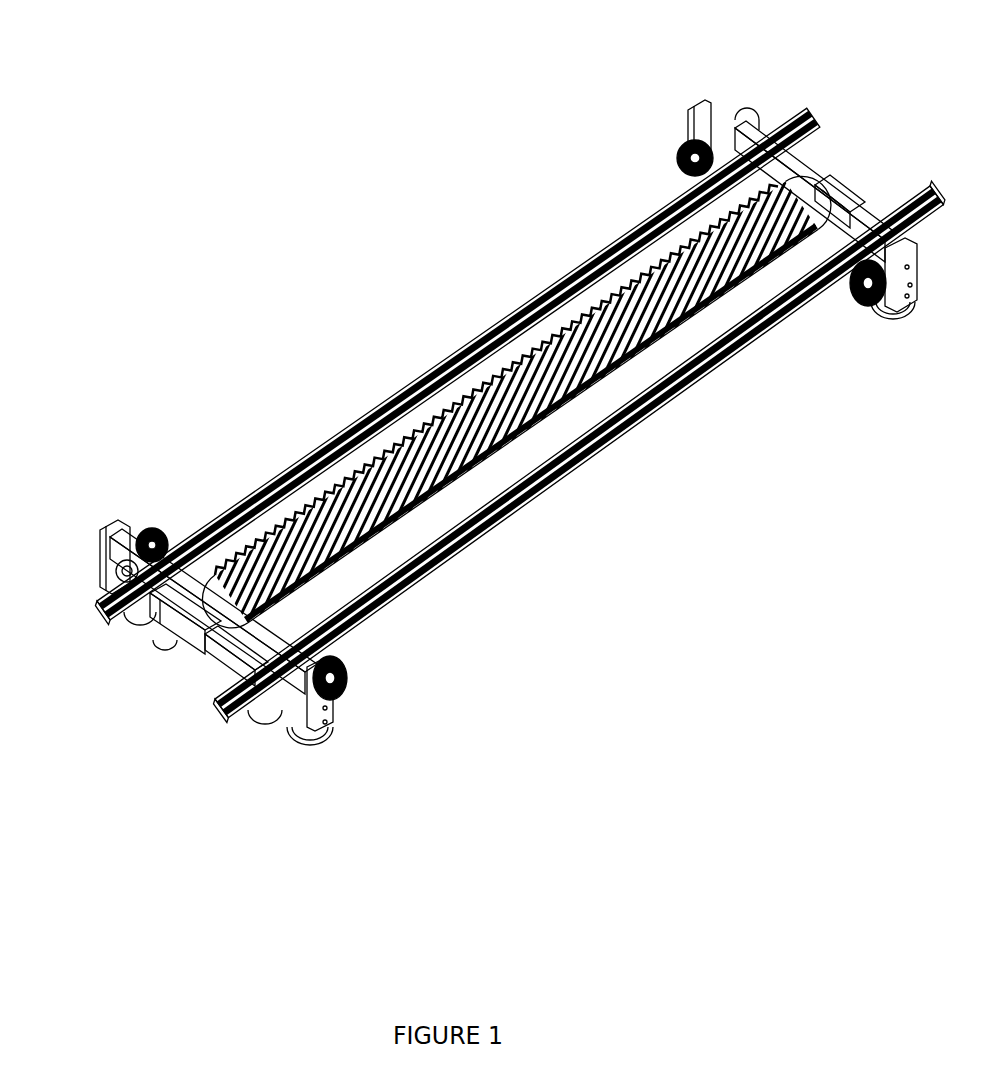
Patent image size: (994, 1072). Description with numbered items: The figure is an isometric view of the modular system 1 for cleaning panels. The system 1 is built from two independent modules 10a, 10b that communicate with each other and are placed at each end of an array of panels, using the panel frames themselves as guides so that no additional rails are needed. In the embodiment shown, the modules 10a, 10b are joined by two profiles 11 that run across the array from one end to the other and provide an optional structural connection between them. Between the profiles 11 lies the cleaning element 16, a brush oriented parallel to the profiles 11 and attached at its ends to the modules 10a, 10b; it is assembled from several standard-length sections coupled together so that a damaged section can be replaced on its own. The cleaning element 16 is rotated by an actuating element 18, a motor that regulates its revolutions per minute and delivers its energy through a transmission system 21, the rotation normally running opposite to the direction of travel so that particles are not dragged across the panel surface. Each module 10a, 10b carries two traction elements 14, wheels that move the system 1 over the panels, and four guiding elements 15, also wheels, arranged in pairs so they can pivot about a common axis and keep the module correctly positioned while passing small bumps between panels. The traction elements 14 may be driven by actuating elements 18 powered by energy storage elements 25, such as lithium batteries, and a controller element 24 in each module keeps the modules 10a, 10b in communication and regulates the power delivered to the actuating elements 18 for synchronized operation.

The modular system 1 is at (342, 207).
The module 10a is at (715, 120).
The module 10b is at (115, 530).
The profile 11 is at (493, 327).
The traction element 14 is at (680, 150).
The guiding element 15 is at (898, 330).
The cleaning element 16 is at (566, 320).
The actuating element 18 is at (100, 584).
The transmission system 21 is at (182, 637).
The controller element 24 is at (223, 660).
The energy storage element 25 is at (840, 193).